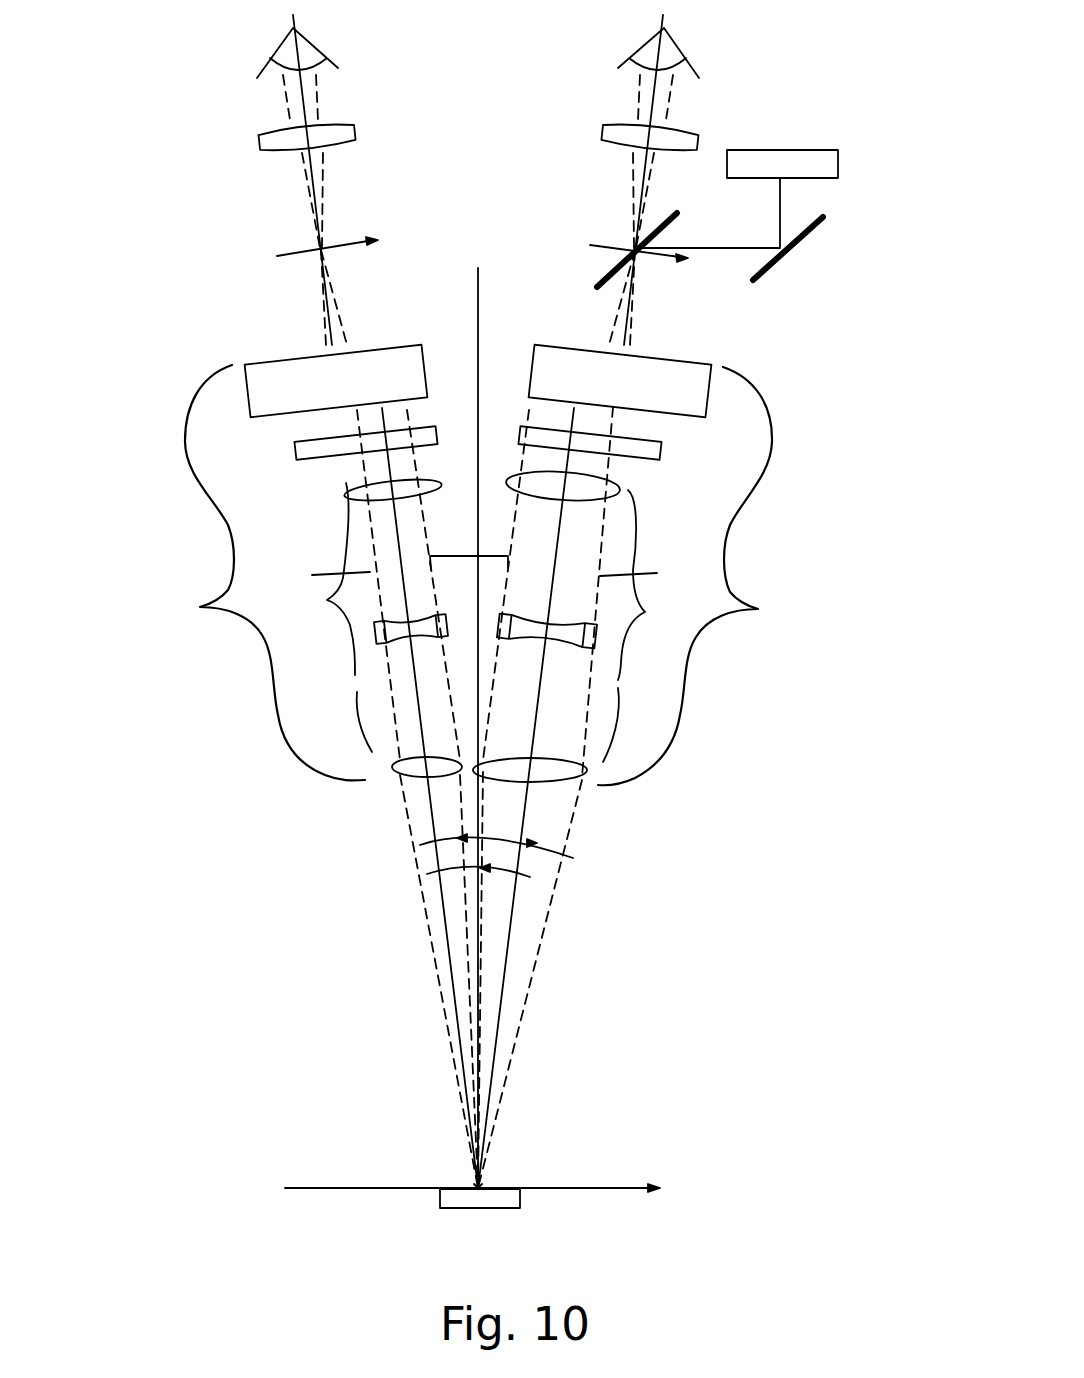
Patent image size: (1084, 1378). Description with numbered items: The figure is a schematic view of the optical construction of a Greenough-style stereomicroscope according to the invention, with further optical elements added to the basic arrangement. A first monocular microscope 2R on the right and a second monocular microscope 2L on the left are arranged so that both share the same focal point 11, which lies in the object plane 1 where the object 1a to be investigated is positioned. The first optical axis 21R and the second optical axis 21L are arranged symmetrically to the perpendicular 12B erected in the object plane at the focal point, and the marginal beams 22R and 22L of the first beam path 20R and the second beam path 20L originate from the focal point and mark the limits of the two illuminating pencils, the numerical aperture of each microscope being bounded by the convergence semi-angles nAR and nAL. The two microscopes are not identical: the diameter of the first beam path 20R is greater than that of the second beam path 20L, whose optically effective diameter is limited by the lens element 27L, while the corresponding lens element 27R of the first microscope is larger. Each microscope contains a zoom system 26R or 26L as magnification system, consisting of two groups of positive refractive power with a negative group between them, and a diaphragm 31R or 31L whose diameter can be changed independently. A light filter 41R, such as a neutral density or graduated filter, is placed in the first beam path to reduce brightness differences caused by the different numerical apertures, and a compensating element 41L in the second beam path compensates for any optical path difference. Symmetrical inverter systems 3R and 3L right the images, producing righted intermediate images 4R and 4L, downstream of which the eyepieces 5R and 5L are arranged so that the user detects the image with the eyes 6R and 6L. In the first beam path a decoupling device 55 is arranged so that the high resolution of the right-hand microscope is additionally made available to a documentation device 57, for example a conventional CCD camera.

The object plane 1 is at (603, 1188).
The object 1a is at (457, 1198).
The focal point 11 is at (475, 1186).
The perpendicular 12B is at (478, 290).
The second monocular microscope 2L is at (257, 572).
The first monocular microscope 2R is at (702, 576).
The inverter system 3L is at (263, 362).
The inverter system 3R is at (683, 362).
The righted intermediate image 4L is at (287, 255).
The righted intermediate image 4R is at (651, 258).
The eyepiece 5L is at (273, 132).
The eyepiece 5R is at (683, 133).
The eye 6L is at (273, 62).
The eye 6R is at (690, 62).
The compensating element 41L is at (312, 449).
The light filter 41R is at (650, 446).
The diaphragm 31L is at (323, 575).
The diaphragm 31R is at (637, 577).
The zoom system 26L is at (361, 579).
The zoom system 26R is at (601, 585).
The second optical axis 21L is at (418, 702).
The first optical axis 21R is at (540, 702).
The lens element 27L is at (395, 763).
The lens element 27R is at (593, 781).
The second beam path 20L is at (417, 813).
The first beam path 20R is at (550, 813).
The marginal beam 22L is at (440, 1008).
The marginal beam 22R is at (532, 980).
The convergence semi-angle nAL is at (427, 874).
The convergence semi-angle nAR is at (540, 845).
The decoupling device 55 is at (720, 257).
The documentation device 57 is at (827, 170).